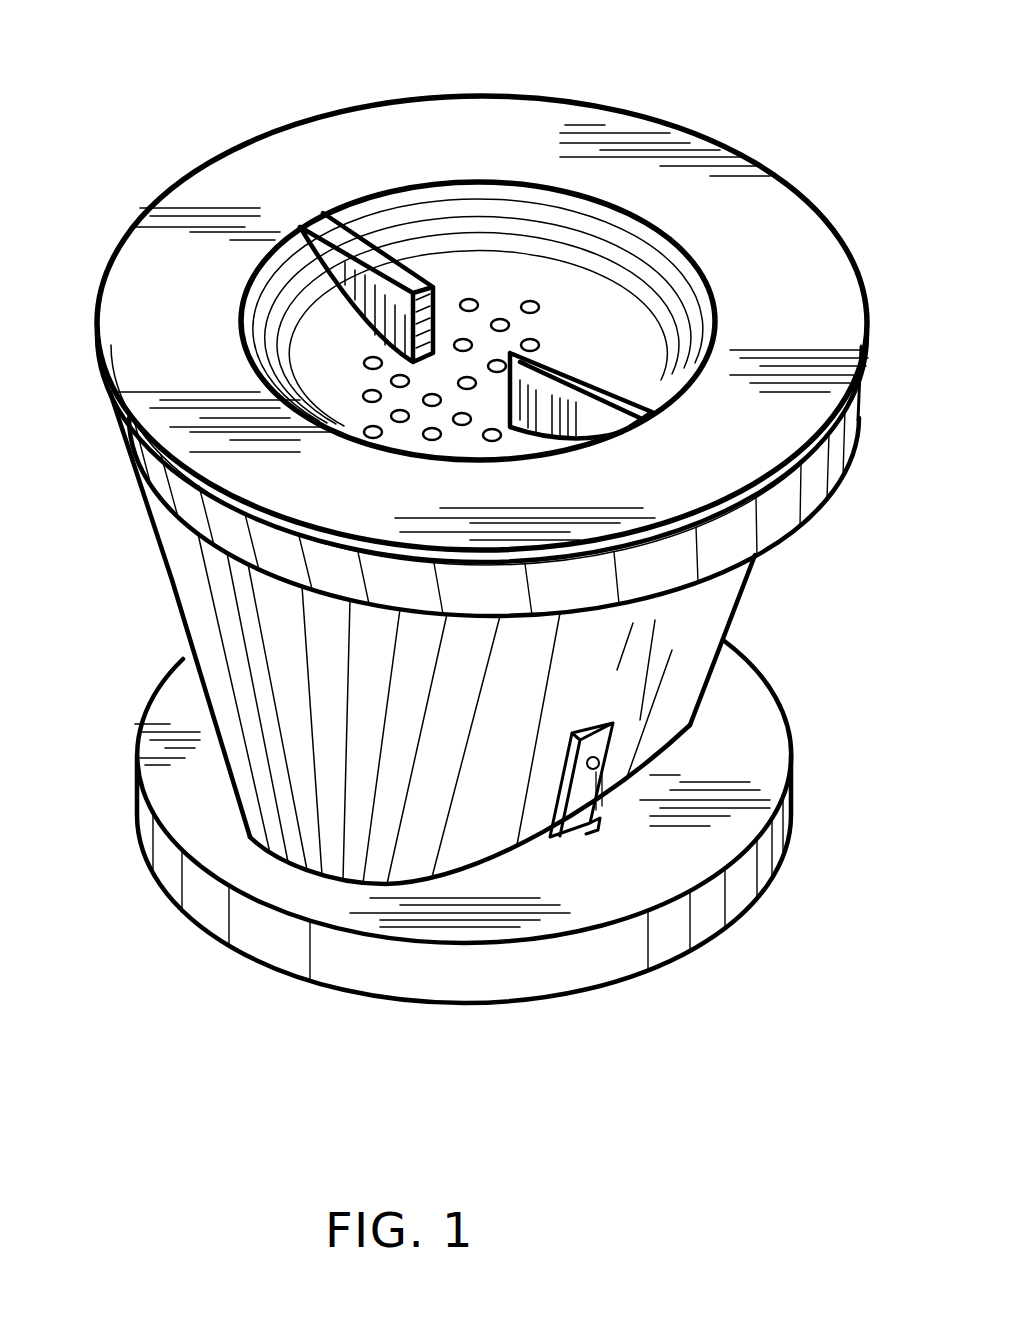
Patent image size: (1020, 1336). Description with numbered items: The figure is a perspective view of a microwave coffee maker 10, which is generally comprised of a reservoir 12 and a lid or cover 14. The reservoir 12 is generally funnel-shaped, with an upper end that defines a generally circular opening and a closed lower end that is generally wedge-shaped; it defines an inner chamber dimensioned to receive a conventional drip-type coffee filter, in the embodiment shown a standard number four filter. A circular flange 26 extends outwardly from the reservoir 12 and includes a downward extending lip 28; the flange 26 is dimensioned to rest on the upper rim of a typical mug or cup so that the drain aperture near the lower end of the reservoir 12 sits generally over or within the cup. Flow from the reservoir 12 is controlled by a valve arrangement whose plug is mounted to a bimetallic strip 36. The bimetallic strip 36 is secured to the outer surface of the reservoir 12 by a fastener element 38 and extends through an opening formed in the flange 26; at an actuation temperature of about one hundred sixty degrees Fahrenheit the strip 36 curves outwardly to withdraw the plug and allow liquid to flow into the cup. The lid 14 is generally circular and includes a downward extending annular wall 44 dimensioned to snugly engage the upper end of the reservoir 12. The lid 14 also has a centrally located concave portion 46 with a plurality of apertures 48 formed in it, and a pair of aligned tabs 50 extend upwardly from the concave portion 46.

The microwave coffee maker 10 is at (789, 150).
The reservoir 12 is at (203, 613).
The lid 14 is at (150, 297).
The circular flange 26 is at (743, 752).
The downward extending lip 28 is at (610, 963).
The bimetallic strip 36 is at (545, 822).
The fastener element 38 is at (588, 735).
The annular wall 44 is at (793, 503).
The concave portion 46 is at (581, 270).
The apertures 48 is at (526, 302).
The tabs 50 is at (372, 297).